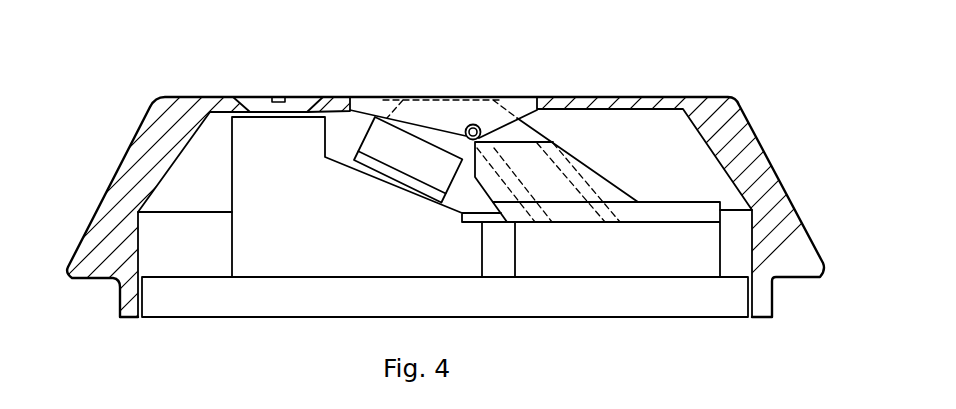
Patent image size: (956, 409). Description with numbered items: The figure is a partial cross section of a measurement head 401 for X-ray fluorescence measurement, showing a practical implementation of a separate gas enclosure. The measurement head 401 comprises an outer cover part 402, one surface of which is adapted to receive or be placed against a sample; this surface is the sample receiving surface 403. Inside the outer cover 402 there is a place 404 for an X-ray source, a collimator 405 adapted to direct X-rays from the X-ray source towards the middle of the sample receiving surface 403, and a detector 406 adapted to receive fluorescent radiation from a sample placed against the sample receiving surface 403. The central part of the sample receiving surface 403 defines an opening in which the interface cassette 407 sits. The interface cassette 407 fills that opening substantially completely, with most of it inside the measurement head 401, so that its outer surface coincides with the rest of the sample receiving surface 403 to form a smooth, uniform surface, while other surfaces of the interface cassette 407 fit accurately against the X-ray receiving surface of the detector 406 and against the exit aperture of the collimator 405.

The measurement head 401 is at (112, 82).
The outer cover part 402 is at (747, 130).
The sample receiving surface 403 is at (613, 97).
The place for an X-ray source 404 is at (673, 260).
The collimator 405 is at (539, 150).
The detector 406 is at (378, 138).
The interface cassette 407 is at (430, 108).